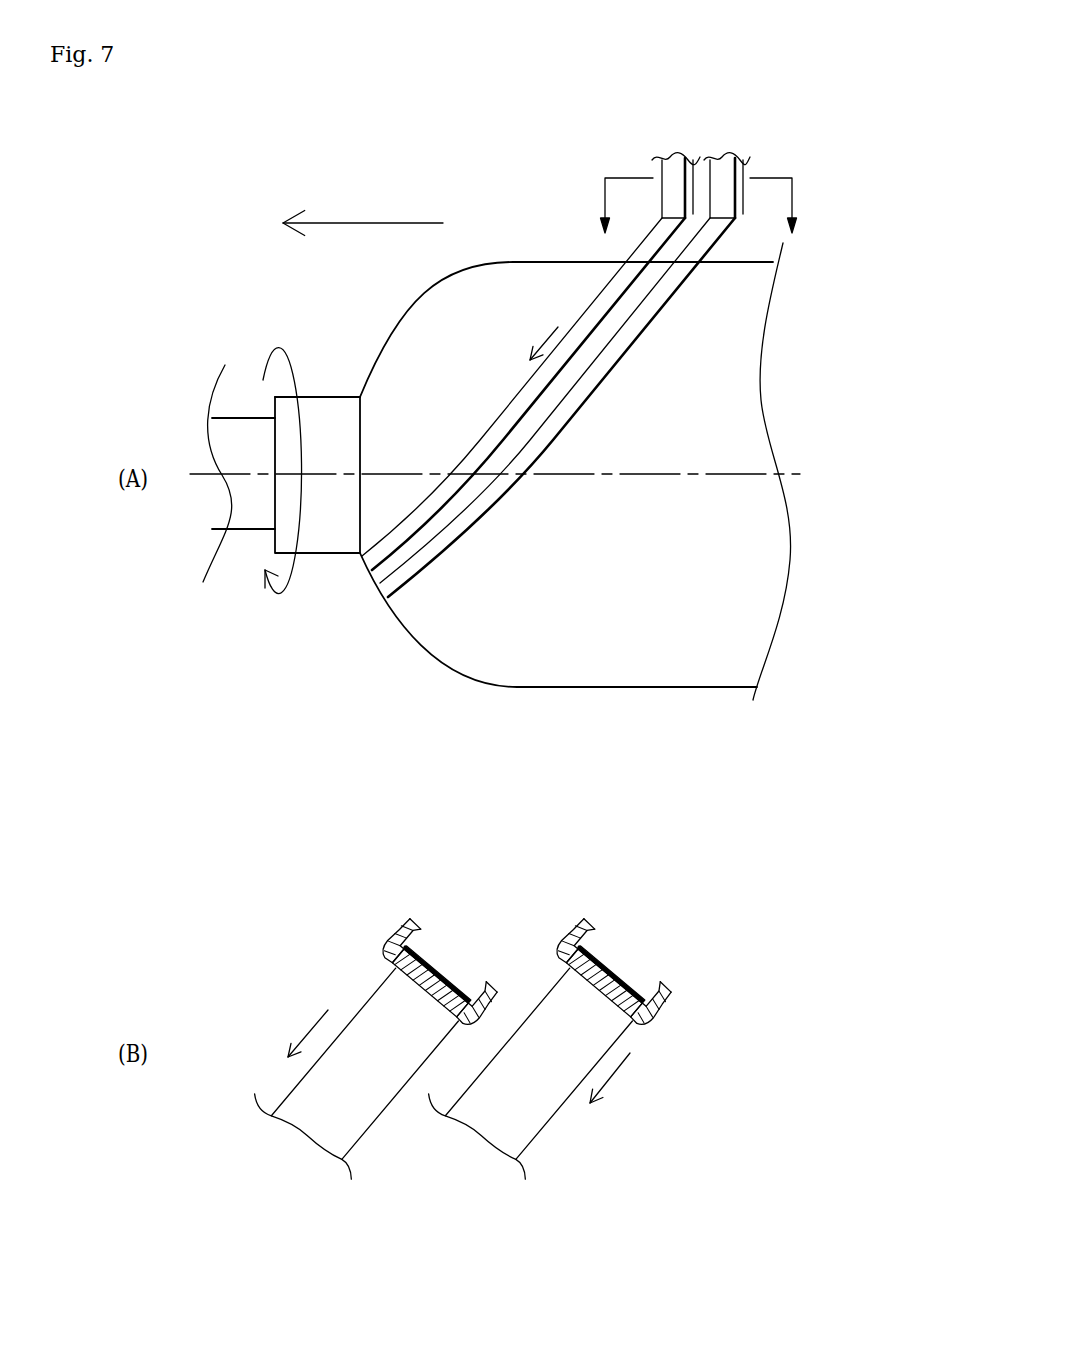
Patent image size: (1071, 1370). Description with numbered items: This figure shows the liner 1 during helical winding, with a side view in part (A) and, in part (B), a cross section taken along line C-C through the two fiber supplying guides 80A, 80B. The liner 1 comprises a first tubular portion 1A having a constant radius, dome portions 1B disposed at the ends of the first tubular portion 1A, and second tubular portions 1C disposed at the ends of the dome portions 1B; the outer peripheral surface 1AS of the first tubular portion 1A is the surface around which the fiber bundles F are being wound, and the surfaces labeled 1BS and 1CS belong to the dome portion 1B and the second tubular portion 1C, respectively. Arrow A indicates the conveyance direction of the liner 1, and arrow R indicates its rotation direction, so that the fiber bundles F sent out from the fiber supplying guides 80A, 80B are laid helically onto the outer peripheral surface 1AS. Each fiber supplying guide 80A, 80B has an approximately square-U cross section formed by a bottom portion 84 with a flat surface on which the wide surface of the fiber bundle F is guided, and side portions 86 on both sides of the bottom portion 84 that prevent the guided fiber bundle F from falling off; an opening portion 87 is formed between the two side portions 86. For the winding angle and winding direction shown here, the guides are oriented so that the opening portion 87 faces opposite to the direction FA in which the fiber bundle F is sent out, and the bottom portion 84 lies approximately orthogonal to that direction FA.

The liner 1 is at (567, 165).
The first tubular portion 1A is at (523, 277).
The outer peripheral surface of the first tubular portion 1AS is at (565, 262).
The dome portion 1B is at (403, 337).
The surface of tapered portion 1BS is at (422, 297).
The second tubular portion 1C is at (320, 412).
The surface of small-diameter portion 1CS is at (351, 397).
The fiber supplying guide 80A is at (725, 170).
The fiber supplying guide 80B is at (676, 168).
The bottom portion 84 is at (397, 972).
The side portion 86 is at (398, 933).
The opening portion 87 is at (432, 933).
The fiber bundle F is at (583, 334).
The direction in which the fiber bundle is sent out FA is at (463, 714).
The arrow indicating conveyance direction A is at (363, 214).
The arrow indicating rotation direction R is at (282, 488).
The line C- C is at (699, 189).